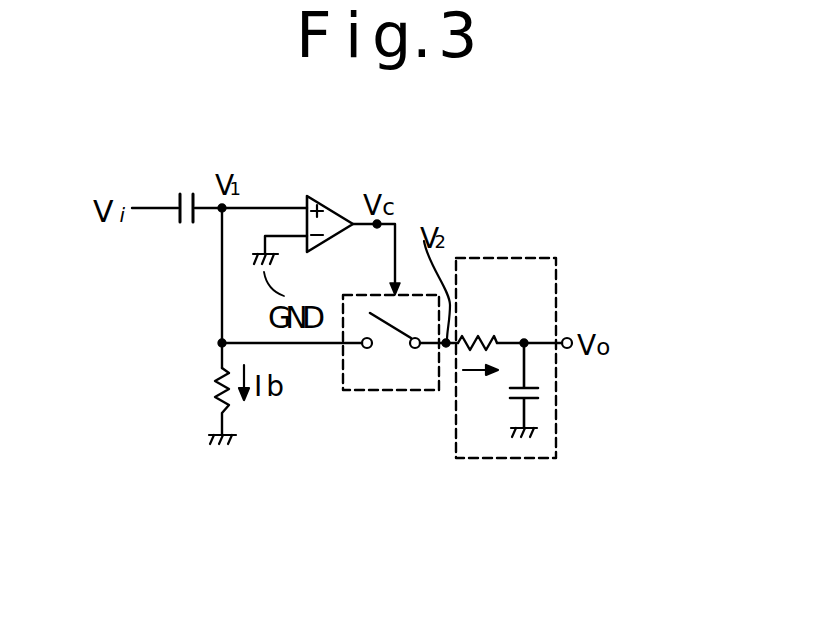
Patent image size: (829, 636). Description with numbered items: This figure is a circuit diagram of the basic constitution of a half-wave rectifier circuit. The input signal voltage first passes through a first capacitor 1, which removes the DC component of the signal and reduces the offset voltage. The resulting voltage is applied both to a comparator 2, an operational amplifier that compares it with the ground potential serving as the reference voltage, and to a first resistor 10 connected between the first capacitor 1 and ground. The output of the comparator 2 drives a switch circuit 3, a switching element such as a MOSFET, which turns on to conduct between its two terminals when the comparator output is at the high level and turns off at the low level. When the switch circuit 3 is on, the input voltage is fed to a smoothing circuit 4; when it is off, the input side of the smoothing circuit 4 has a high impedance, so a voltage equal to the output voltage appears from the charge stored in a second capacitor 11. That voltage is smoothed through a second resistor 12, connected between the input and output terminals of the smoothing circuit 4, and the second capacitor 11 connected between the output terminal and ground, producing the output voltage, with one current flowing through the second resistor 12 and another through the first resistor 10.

The capacitor C1 1 is at (186, 187).
The comparator 2 is at (332, 207).
The switch circuit 3 is at (393, 392).
The smoothing circuit 4 is at (565, 325).
The resistor R1 10 is at (226, 403).
The capacitor C2 11 is at (540, 393).
The resistor R2 12 is at (494, 340).